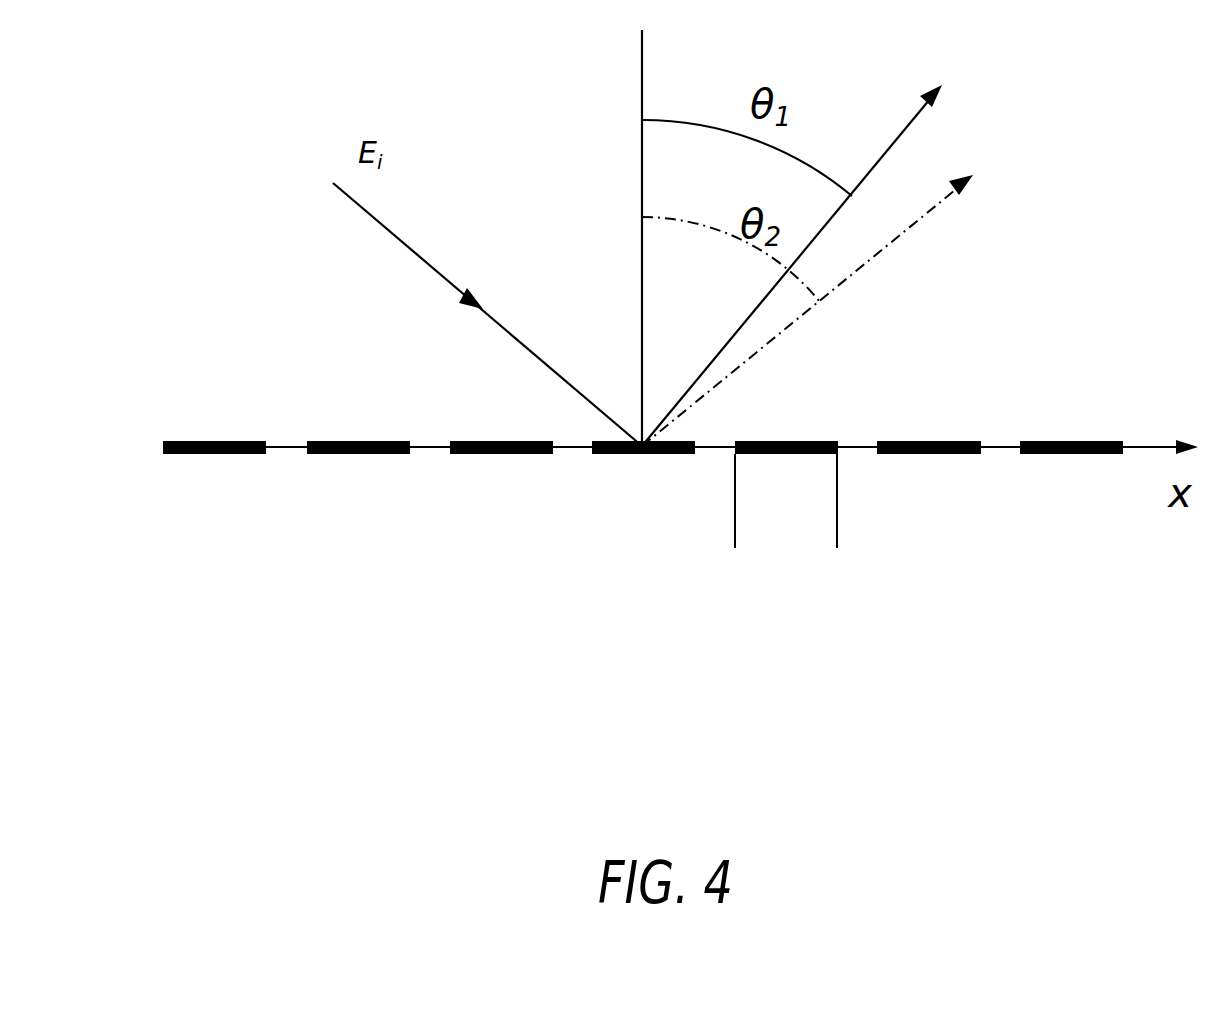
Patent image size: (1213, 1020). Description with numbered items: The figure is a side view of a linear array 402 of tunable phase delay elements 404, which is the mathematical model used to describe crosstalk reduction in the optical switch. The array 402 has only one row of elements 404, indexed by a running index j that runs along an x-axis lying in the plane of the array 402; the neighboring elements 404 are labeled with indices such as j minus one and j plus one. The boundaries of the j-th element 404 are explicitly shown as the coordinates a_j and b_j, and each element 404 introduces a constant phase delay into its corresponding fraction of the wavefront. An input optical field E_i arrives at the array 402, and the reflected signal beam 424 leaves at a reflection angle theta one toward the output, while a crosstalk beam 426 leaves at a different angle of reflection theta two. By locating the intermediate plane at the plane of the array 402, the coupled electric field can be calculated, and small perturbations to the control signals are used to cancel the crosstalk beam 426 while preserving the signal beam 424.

The linear array 402 is at (646, 525).
The tunable phase delay element 404 is at (643, 394).
The signal beam 424 is at (921, 102).
The crosstalk beam 426 is at (933, 207).